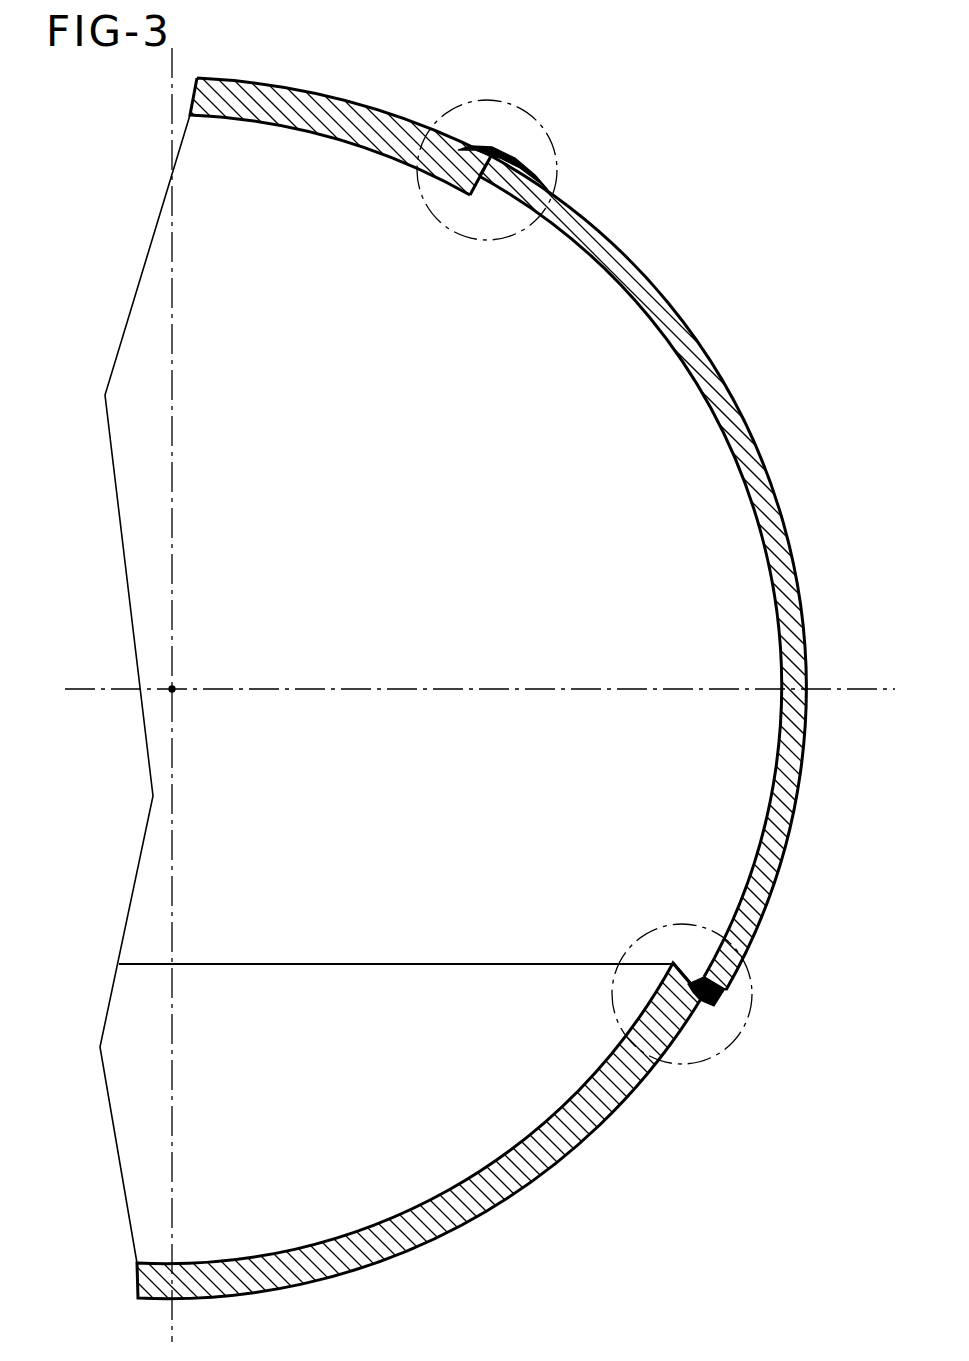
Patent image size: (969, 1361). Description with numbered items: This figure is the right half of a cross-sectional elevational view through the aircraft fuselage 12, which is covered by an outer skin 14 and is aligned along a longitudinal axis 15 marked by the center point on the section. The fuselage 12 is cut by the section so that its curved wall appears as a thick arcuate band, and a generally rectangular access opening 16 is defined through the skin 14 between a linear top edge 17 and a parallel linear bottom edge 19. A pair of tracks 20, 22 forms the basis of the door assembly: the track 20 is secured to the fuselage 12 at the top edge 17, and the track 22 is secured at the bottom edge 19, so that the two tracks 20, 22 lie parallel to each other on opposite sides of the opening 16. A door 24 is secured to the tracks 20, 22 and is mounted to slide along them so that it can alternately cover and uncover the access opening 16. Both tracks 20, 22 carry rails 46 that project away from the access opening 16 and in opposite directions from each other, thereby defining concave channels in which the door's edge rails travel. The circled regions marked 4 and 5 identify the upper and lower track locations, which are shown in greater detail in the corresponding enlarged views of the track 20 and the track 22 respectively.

The detail view of upper track 4 is at (531, 104).
The detail view of lower track 5 is at (732, 1044).
The fuselage 12 is at (292, 90).
The outer skin 14 is at (372, 100).
The longitudinal axis 15 is at (175, 686).
The access opening 16 is at (720, 556).
The top edge 17 is at (480, 198).
The bottom edge 19 is at (685, 959).
The track 20 is at (489, 172).
The track 22 is at (710, 985).
The door 24 is at (751, 427).
The rail 46 is at (484, 150).